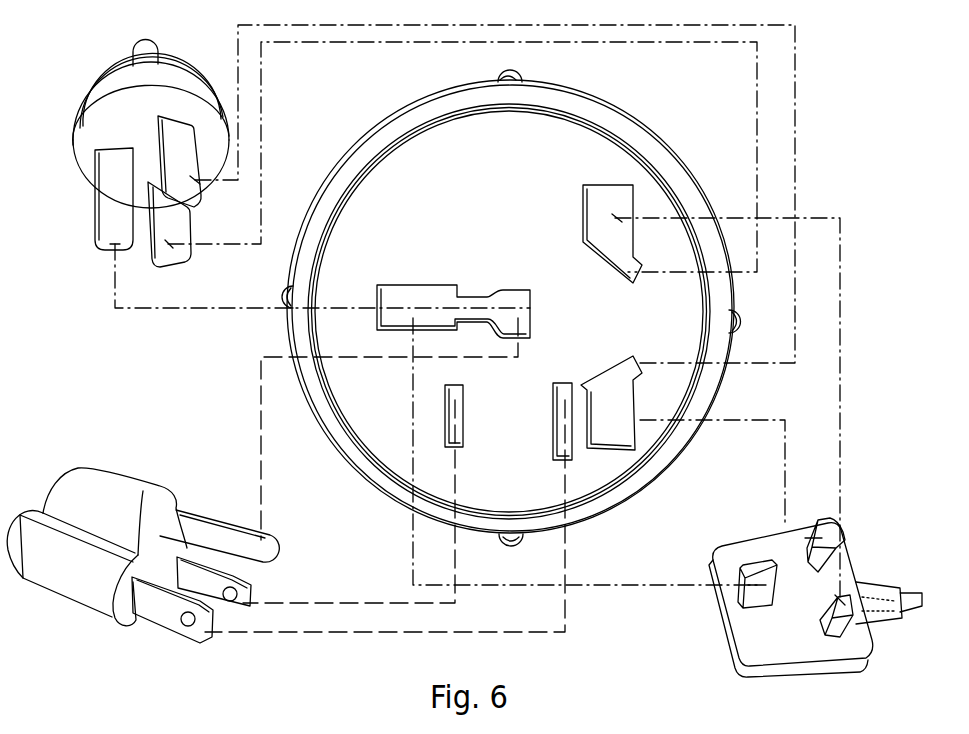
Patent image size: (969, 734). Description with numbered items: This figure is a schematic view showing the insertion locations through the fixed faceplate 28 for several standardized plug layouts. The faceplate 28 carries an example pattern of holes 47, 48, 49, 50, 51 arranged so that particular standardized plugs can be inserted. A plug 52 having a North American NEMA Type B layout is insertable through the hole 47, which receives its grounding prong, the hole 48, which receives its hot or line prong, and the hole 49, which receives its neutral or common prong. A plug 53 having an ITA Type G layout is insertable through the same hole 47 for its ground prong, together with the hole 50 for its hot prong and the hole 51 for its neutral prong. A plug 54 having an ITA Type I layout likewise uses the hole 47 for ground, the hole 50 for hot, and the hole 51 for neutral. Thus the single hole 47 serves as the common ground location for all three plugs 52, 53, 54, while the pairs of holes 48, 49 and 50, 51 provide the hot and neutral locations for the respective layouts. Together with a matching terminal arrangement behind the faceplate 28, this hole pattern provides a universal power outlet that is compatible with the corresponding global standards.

The fixed faceplate 28 is at (652, 140).
The hole 47 is at (431, 294).
The hole 48 is at (455, 406).
The hole 49 is at (566, 389).
The hole 50 is at (588, 209).
The hole 51 is at (618, 380).
The plug 52 is at (132, 490).
The plug 53 is at (818, 668).
The plug 54 is at (90, 97).